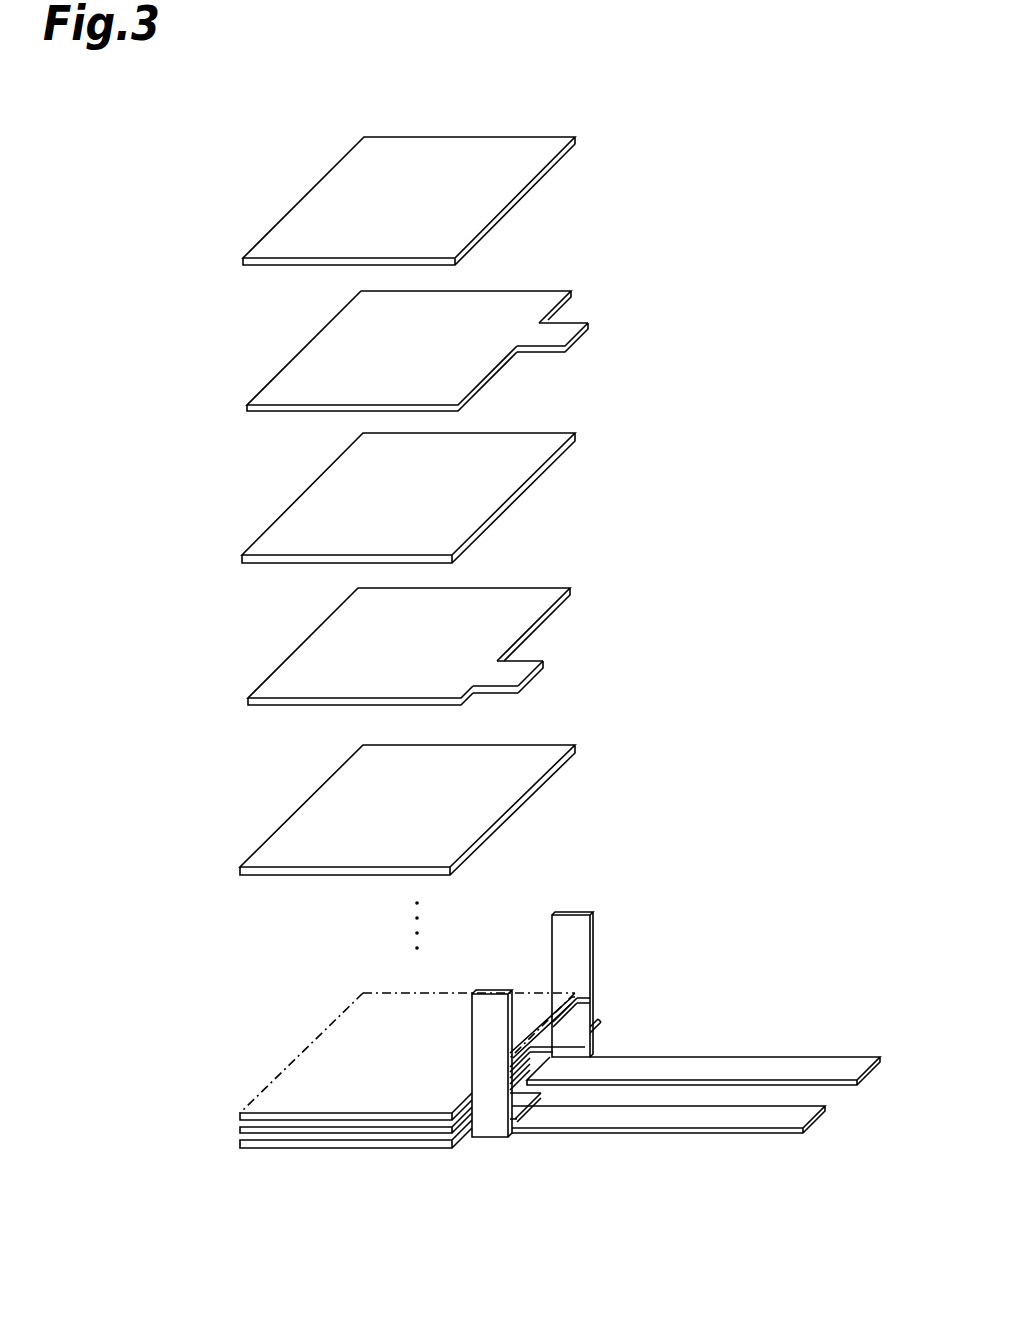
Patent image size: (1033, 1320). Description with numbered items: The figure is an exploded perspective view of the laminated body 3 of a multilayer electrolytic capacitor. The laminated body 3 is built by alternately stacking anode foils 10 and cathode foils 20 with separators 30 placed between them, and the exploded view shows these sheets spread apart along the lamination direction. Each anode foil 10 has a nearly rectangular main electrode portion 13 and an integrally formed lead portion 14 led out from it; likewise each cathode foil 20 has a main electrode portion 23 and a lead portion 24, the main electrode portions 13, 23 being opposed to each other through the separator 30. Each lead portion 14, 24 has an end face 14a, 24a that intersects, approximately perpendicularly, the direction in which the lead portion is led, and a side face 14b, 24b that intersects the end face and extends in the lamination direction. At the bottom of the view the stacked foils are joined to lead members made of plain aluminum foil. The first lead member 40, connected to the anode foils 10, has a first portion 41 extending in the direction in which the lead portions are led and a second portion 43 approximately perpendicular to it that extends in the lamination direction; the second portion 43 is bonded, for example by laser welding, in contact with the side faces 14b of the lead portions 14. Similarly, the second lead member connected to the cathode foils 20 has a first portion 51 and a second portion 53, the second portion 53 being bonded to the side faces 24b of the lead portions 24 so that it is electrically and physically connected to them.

The laminated body 3 is at (185, 108).
The anode foil 10 is at (497, 588).
The main electrode portion 13 is at (333, 650).
The lead portion 14 is at (520, 665).
The end face 14a is at (537, 677).
The side face 14b is at (497, 688).
The cathode foil 20 is at (493, 291).
The main electrode portion 23 is at (333, 353).
The lead portion 24 is at (557, 328).
The end face 24a is at (583, 334).
The side face 24b is at (588, 323).
The separator 30 is at (283, 216).
The first lead member 40 is at (567, 1203).
The first portion 41 is at (573, 1133).
The second portion 43 is at (482, 1137).
The first portion 51 is at (681, 943).
The second portion 53 is at (593, 968).